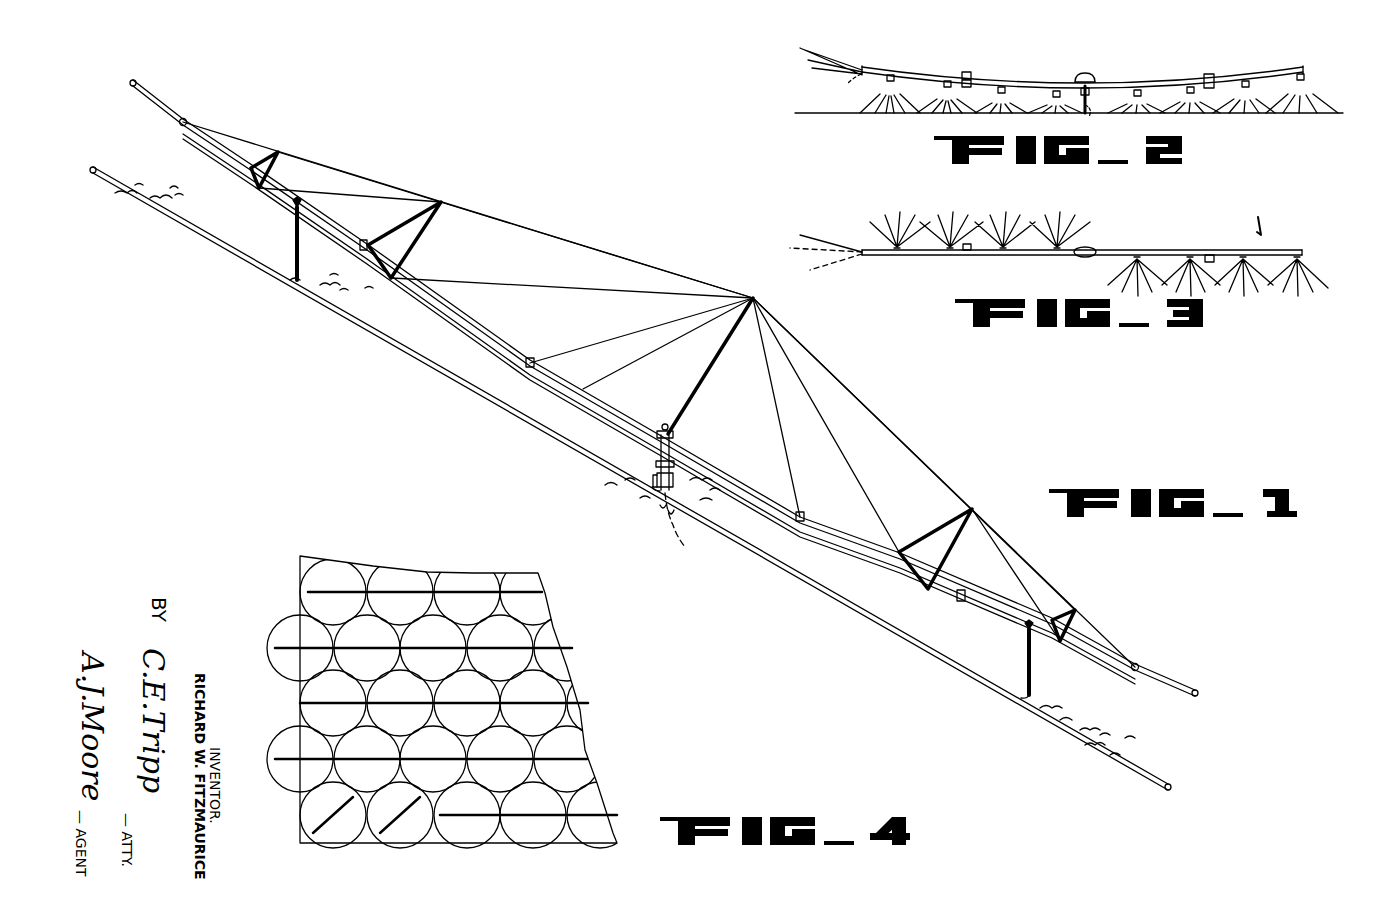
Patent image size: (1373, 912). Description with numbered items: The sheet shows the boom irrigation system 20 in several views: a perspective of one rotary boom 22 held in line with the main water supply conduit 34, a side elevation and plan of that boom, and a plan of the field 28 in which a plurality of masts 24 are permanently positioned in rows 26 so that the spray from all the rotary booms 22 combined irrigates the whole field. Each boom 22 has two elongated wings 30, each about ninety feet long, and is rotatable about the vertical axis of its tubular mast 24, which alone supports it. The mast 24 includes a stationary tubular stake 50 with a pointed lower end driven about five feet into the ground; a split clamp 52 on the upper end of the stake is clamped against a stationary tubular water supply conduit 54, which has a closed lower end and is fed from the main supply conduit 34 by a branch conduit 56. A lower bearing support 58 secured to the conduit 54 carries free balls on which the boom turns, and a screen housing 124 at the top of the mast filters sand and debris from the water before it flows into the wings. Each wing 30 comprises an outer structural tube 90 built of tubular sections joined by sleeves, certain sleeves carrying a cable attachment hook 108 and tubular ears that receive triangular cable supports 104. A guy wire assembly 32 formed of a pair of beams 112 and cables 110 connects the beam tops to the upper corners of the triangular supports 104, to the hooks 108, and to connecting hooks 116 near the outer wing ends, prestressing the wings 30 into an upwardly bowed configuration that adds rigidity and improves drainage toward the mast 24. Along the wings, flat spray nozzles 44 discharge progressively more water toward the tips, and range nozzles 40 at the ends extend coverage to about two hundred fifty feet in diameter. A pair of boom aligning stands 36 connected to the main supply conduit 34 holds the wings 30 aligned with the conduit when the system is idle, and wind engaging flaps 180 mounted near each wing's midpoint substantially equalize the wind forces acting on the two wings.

In FIG. 1, the boom irrigation system 20 is at (516, 162).
In FIG. 2, the boom irrigation system 20 is at (1132, 50).
In FIG. 3, the boom irrigation system 20 is at (1168, 212).
In FIG. 4, the boom irrigation system 20 is at (368, 545).
In FIG. 1, the rotary boom 22 is at (1198, 686).
In FIG. 2, the rotary boom 22 is at (887, 62).
In FIG. 3, the rotary boom 22 is at (1284, 249).
In FIG. 4, the rotary boom 22 is at (403, 587).
In FIG. 1, the mast 24 is at (657, 481).
In FIG. 2, the mast 24 is at (1080, 98).
In FIG. 4, the rows 26 is at (540, 590).
In FIG. 4, the field 28 is at (505, 843).
In FIG. 1, the elongated wing 30 is at (157, 101).
In FIG. 2, the elongated wing 30 is at (936, 70).
In FIG. 3, the elongated wing 30 is at (930, 259).
In FIG. 1, the guy wire assembly 32 is at (702, 286).
In FIG. 1, the main water supply conduit 34 is at (927, 650).
In FIG. 1, the boom aligning stand 36 is at (292, 244).
In FIG. 2, the range nozzle 40 is at (865, 77).
In FIG. 3, the range nozzle 40 is at (862, 258).
In FIG. 2, the flat spray nozzle 44 is at (1005, 97).
In FIG. 3, the flat spray nozzle 44 is at (1186, 262).
In FIG. 1, the stationary tubular stake 50 is at (682, 541).
In FIG. 2, the stationary tubular stake 50 is at (1093, 110).
In FIG. 1, the split clamp 52 is at (690, 484).
In FIG. 1, the stationary tubular water supply conduit 54 is at (659, 442).
In FIG. 1, the branch conduit 56 is at (650, 486).
In FIG. 1, the lower bearing support 58 is at (686, 462).
In FIG. 1, the outer structural tube 90 is at (225, 157).
In FIG. 1, the triangular cable support 104 is at (283, 160).
In FIG. 1, the cable attachment hook 108 is at (540, 355).
In FIG. 1, the cable 110 is at (644, 357).
In FIG. 1, the beam 112 is at (693, 391).
In FIG. 1, the connecting hook 116 is at (178, 126).
In FIG. 1, the screen housing 124 is at (690, 437).
In FIG. 2, the screen housing 124 is at (1092, 72).
In FIG. 3, the screen housing 124 is at (1092, 246).
In FIG. 1, the wind engaging flap 180 is at (365, 240).
In FIG. 2, the wind engaging flap 180 is at (971, 72).
In FIG. 3, the wind engaging flap 180 is at (966, 248).